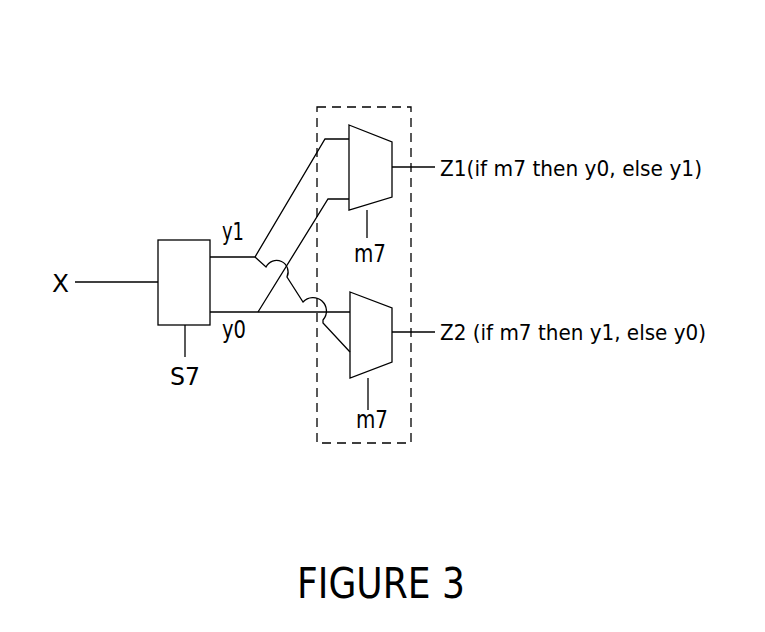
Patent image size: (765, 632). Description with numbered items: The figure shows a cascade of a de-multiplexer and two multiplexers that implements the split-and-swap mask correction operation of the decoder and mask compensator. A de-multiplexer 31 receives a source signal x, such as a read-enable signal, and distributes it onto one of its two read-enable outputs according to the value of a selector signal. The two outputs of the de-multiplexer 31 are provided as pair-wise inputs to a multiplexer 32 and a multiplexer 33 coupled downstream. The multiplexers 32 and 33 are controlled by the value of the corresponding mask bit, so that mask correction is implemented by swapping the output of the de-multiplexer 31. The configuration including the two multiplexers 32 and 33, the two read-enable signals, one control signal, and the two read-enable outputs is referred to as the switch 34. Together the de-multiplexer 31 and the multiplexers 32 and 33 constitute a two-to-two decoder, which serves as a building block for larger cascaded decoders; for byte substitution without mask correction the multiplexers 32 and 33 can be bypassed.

The de-multiplexer 31 is at (175, 250).
The multiplexer 32 is at (372, 125).
The multiplexer 33 is at (386, 372).
The switch 34 is at (416, 105).